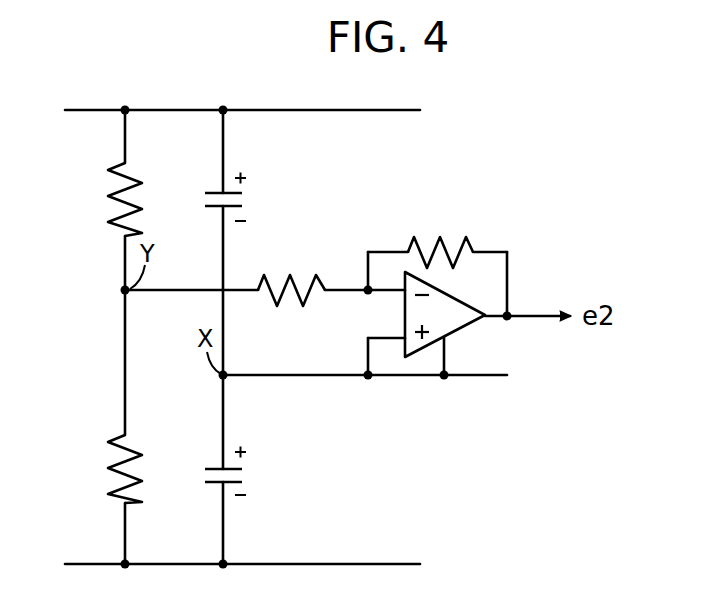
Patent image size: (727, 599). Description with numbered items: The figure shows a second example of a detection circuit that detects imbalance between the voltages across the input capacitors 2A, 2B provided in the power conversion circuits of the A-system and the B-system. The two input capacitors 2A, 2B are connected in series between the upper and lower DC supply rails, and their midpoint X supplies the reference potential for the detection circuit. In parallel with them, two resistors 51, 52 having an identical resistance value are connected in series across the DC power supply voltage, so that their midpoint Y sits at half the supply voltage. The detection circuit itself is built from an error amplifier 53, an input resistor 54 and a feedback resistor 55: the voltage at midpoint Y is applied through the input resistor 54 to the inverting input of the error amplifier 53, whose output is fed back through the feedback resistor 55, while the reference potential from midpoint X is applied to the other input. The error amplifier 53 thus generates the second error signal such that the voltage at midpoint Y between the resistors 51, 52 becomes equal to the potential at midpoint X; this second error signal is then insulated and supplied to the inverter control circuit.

The resistor 51 is at (112, 214).
The resistor 52 is at (112, 482).
The input capacitor 2A is at (245, 208).
The input capacitor 2B is at (245, 485).
The input resistor 54 is at (306, 282).
The feedback resistor 55 is at (455, 243).
The error amplifier 53 is at (462, 330).